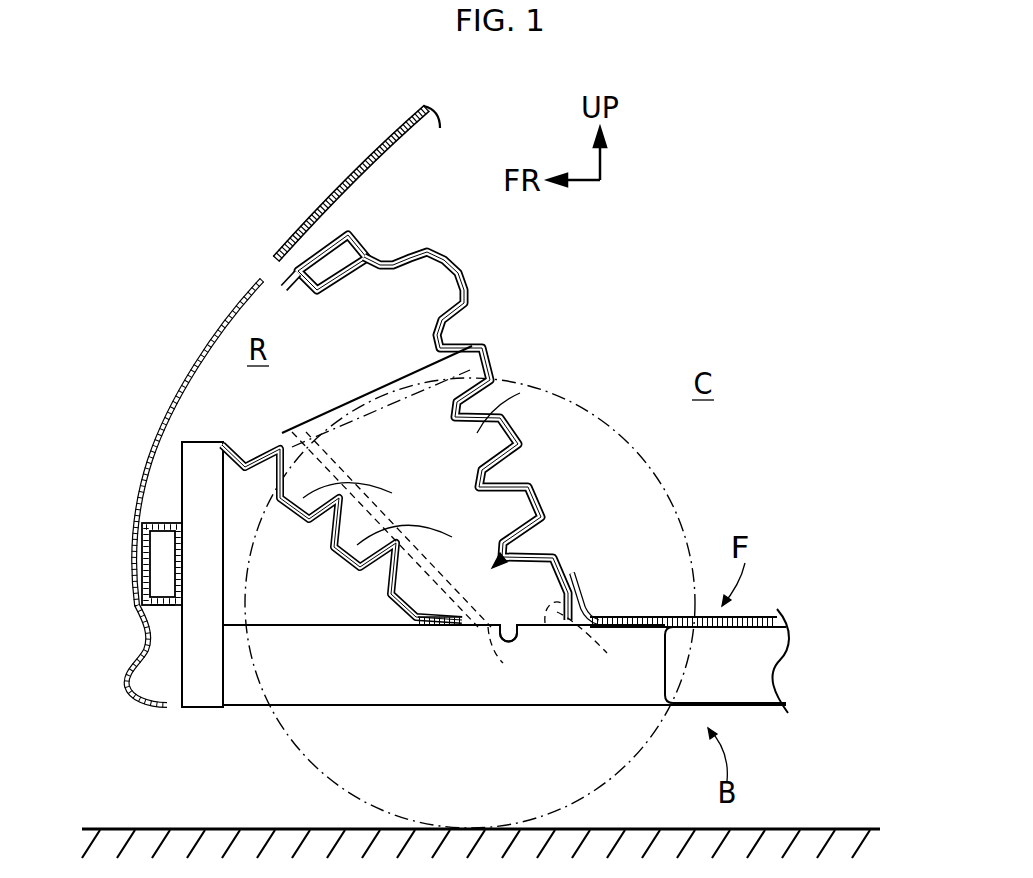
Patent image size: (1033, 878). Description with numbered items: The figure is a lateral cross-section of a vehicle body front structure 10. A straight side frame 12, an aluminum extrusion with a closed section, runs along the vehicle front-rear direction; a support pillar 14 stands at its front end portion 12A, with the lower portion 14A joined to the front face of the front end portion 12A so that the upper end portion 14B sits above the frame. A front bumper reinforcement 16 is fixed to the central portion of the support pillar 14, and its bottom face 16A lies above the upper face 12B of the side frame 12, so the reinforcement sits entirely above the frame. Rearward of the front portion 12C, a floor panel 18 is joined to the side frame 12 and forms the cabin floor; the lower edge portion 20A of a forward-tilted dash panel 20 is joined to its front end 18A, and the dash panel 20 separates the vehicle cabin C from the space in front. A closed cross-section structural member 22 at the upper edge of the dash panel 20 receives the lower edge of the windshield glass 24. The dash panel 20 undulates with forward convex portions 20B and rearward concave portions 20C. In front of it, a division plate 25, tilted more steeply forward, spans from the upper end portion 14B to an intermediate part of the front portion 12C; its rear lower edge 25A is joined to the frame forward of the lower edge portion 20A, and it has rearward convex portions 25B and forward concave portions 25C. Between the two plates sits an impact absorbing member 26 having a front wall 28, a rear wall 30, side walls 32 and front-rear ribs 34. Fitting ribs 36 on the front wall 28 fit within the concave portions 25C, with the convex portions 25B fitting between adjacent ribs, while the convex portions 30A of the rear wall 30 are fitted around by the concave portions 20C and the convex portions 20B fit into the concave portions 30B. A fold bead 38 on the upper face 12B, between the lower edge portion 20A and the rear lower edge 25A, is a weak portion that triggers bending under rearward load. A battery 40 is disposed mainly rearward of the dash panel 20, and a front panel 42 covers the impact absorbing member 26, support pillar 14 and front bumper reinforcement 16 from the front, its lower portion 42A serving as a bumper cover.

The vehicle body front structure 10 is at (145, 328).
The side frame 12 is at (743, 708).
The front end portion 12A is at (245, 695).
The upper face 12B is at (325, 624).
The front portion 12C is at (500, 706).
The support pillar 14 is at (198, 485).
The lower portion 14A is at (201, 709).
The upper end portion 14B is at (200, 442).
The front bumper reinforcement 16 is at (150, 549).
The bottom face 16A is at (163, 606).
The floor panel 18 is at (745, 615).
The front end 18A is at (580, 582).
The dash panel 20 is at (492, 343).
The lower edge portion 20A is at (470, 425).
The convex portion 20B is at (520, 471).
The concave portion 20C is at (546, 412).
The closed cross-section structural member 22 is at (369, 252).
The windshield glass 24 is at (373, 162).
The division plate 25 is at (284, 512).
The rear lower edge 25A is at (437, 626).
The convex portion 25B is at (358, 604).
The concave portion 25C is at (398, 506).
The impact absorbing member 26 is at (326, 411).
The front wall 28 is at (510, 659).
The rear wall 30 is at (591, 641).
The convex portion 30A is at (512, 398).
The concave portion 30B is at (497, 378).
The side wall 32 is at (407, 432).
The front-rear rib 34 is at (407, 432).
The fitting rib 36 is at (280, 448).
The fold bead 38 is at (516, 633).
The battery 40 is at (748, 657).
The front panel 42 is at (222, 314).
The lower portion 42A is at (131, 590).
The vehicle cabin C is at (470, 603).